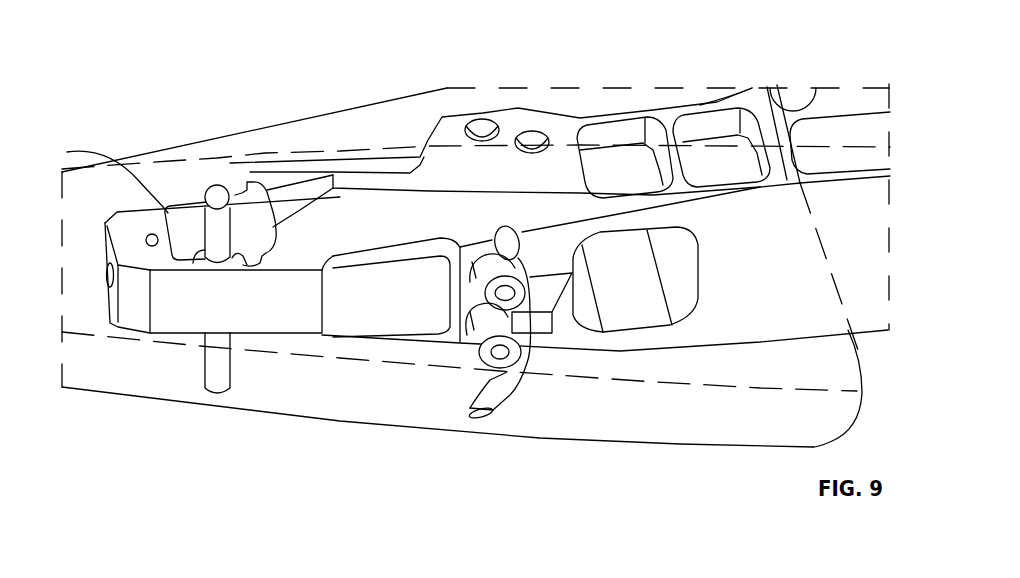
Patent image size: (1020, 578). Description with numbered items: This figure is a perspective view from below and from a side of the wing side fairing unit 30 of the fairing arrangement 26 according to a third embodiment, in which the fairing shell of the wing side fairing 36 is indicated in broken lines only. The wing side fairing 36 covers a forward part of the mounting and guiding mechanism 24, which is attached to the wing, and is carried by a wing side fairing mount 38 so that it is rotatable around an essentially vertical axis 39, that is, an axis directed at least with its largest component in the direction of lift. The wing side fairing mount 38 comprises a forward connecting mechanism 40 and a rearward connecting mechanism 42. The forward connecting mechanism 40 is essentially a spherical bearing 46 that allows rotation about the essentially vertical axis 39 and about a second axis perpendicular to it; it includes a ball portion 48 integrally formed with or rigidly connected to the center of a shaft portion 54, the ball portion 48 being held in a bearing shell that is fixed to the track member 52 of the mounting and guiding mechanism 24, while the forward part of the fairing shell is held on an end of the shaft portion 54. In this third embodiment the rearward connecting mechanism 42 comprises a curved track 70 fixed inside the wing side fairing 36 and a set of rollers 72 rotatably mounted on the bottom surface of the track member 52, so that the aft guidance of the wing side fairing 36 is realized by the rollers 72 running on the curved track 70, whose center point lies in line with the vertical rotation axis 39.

The mounting and guiding mechanism 24 is at (858, 293).
The fairing arrangement 26 is at (723, 467).
The wing side fairing unit 30 is at (157, 97).
The wing side fairing 36 is at (663, 438).
The wing side fairing mount 38 is at (475, 192).
The essentially vertical axis 39 is at (222, 307).
The forward connecting mechanism 40 is at (207, 107).
The rearward connecting mechanism 42 is at (540, 415).
The spherical bearing 46 is at (245, 155).
The ball portion 48 is at (179, 248).
The track member 52 is at (752, 97).
The shaft portion 54 is at (220, 223).
The curved track 70 is at (527, 250).
The rollers 72 is at (482, 302).